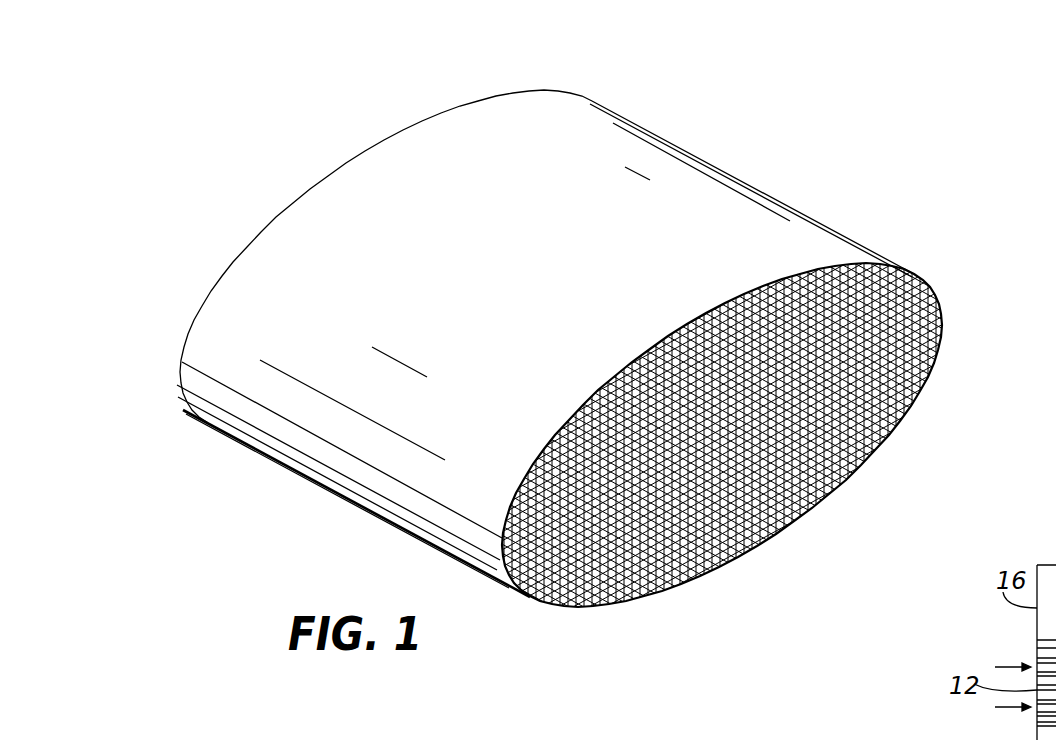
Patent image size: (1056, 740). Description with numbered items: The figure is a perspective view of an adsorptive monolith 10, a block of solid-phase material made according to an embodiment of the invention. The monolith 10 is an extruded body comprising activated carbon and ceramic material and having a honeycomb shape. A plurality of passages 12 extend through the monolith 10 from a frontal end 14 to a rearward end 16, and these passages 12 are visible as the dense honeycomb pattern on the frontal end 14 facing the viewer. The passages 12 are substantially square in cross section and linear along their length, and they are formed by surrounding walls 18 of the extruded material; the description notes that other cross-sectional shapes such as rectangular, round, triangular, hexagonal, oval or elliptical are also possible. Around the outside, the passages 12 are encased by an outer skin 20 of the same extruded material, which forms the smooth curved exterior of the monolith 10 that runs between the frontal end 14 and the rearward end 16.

The monolith 10 is at (778, 196).
The passages 12 is at (872, 379).
The frontal end 14 is at (753, 538).
The rearward end 16 is at (300, 201).
The surrounding walls 18 is at (836, 452).
The outer skin 20 is at (590, 292).